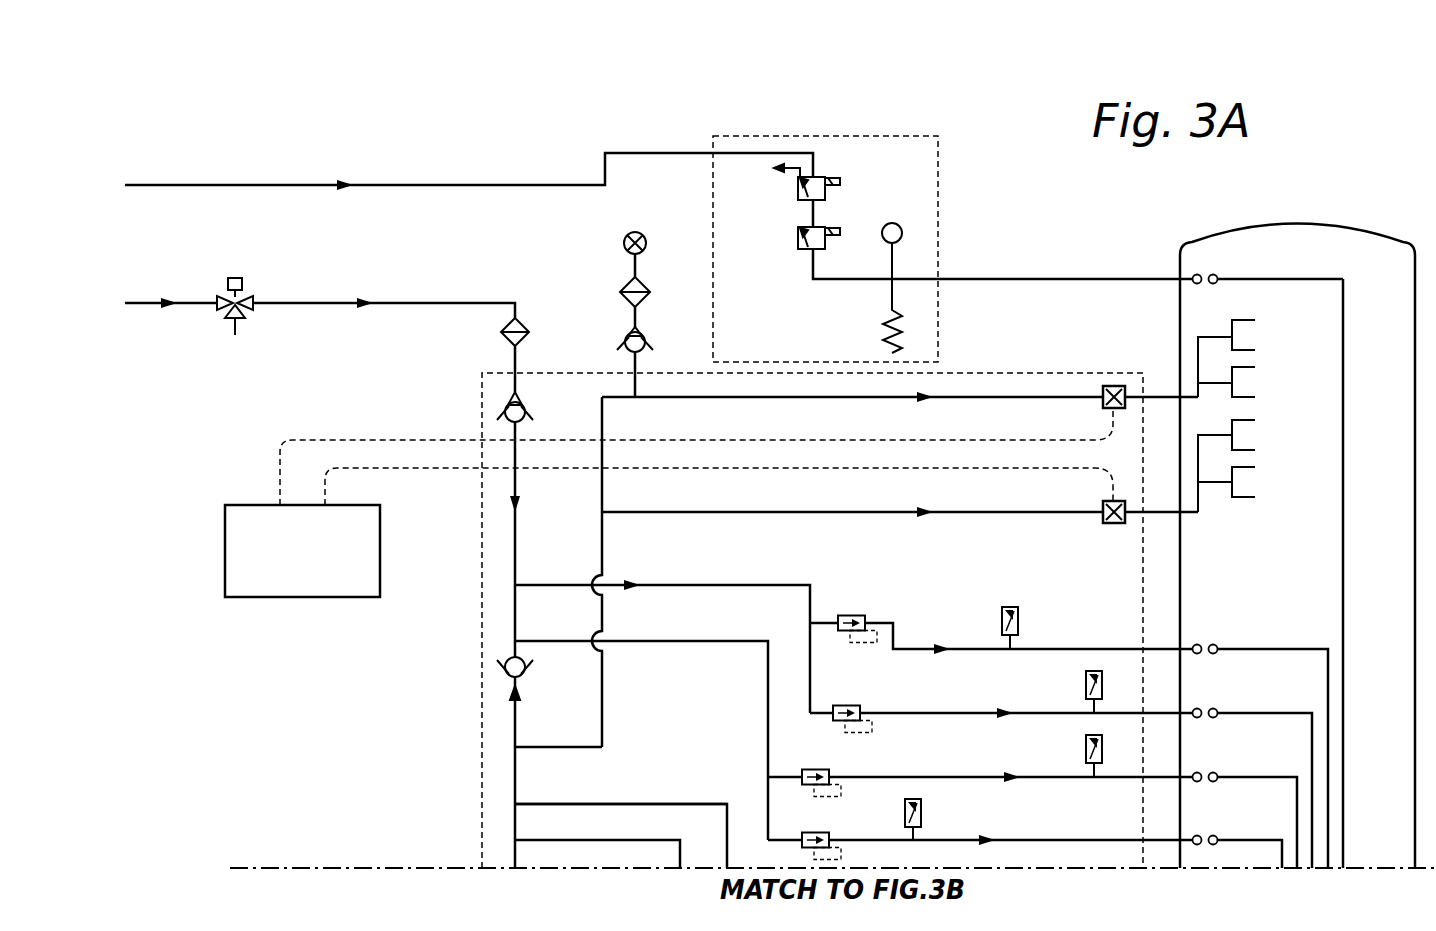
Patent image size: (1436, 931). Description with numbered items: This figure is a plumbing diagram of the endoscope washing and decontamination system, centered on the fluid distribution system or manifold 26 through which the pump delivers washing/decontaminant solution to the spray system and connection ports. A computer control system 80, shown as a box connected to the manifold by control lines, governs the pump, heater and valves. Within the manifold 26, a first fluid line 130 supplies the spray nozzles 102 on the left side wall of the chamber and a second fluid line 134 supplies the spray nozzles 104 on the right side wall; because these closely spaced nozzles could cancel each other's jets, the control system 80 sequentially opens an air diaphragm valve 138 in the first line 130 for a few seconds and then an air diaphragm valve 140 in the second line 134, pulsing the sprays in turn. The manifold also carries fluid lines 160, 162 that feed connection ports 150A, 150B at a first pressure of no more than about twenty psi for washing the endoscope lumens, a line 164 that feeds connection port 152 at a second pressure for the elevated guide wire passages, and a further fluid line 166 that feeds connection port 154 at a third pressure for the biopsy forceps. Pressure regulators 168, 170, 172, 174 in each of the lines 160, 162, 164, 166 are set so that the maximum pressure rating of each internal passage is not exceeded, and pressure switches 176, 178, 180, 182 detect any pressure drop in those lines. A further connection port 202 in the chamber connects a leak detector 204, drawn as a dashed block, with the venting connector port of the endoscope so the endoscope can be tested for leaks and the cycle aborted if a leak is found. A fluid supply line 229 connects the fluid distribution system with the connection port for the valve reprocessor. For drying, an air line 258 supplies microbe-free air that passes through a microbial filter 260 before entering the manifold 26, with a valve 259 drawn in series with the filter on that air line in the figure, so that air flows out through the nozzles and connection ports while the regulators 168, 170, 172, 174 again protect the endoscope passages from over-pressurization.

The manifold 26 is at (483, 816).
The computer control system 80 is at (288, 598).
The spray nozzles 102 is at (1275, 355).
The spray nozzles 104 is at (1277, 470).
The first fluid line 130 is at (793, 398).
The second fluid line 134 is at (793, 513).
The air diaphragm valve 138 is at (1103, 408).
The air diaphragm valve 140 is at (1103, 503).
The connection port 150A is at (1197, 643).
The connection port 150B is at (1197, 707).
The connection port 152 is at (1197, 771).
The connection port 154 is at (1197, 834).
The fluid line 160 is at (1062, 648).
The fluid line 162 is at (940, 712).
The fluid line 164 is at (942, 776).
The fluid line 166 is at (1060, 839).
The pressure regulator 168 is at (852, 613).
The pressure regulator 170 is at (838, 696).
The pressure regulator 172 is at (815, 770).
The pressure regulator 174 is at (815, 833).
The pressure switch 176 is at (1016, 616).
The pressure switch 178 is at (1086, 690).
The pressure switch 180 is at (1086, 756).
The pressure switch 182 is at (921, 810).
The connection port 202 is at (1198, 273).
The leak detector 204 is at (930, 197).
The fluid supply line 229 is at (585, 803).
The air line 258 is at (622, 289).
The shutoff valve 259 is at (626, 238).
The microbial filter 260 is at (626, 349).